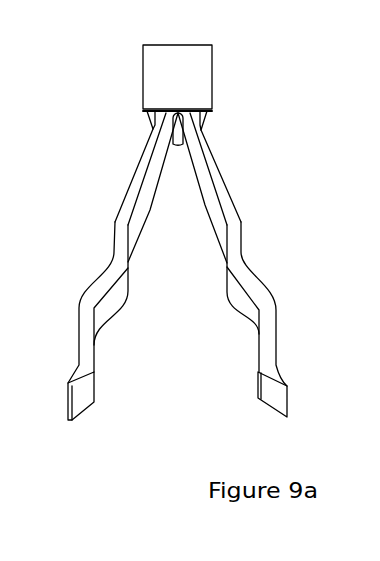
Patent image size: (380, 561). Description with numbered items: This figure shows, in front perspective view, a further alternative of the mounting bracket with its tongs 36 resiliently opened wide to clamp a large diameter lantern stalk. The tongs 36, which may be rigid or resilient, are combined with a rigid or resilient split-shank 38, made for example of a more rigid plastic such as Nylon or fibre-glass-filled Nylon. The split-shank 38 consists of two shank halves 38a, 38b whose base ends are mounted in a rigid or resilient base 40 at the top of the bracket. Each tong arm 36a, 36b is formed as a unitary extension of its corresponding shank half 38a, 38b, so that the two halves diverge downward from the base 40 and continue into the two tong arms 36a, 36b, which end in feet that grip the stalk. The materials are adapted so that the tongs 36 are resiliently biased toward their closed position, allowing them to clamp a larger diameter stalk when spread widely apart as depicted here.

The base 40 is at (214, 64).
The split-shank 38 is at (187, 187).
The shank half 38a is at (135, 172).
The shank half 38b is at (214, 144).
The tongs 36 is at (198, 321).
The tong arm 36a is at (105, 277).
The tong arm 36b is at (285, 305).